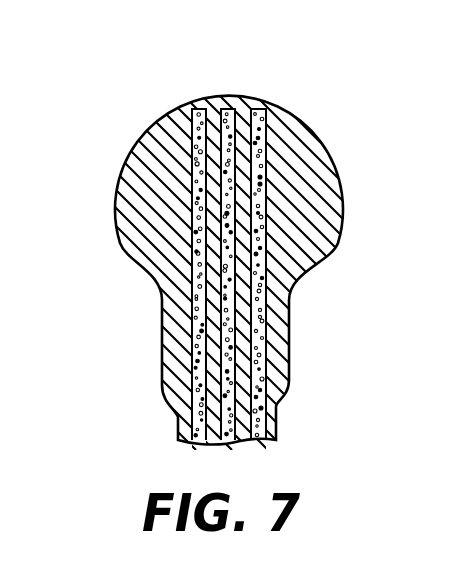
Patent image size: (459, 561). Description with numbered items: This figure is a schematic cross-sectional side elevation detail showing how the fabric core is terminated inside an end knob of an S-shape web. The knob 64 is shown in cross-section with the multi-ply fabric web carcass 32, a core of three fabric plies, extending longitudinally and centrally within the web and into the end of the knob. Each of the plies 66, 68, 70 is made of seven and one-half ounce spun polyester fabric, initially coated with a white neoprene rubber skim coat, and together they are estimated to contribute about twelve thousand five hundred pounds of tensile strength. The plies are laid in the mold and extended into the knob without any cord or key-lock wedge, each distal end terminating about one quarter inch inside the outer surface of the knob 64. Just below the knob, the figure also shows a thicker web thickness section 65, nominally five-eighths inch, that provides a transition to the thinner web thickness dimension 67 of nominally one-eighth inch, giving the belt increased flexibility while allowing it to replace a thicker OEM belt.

The knob 64 is at (229, 248).
The ply 66 is at (202, 117).
The ply 68 is at (236, 117).
The ply 70 is at (289, 102).
The multi-ply fabric web carcass 32 is at (272, 245).
The thicker web thickness section 65 is at (82, 342).
The web thickness dimension 67 is at (98, 427).